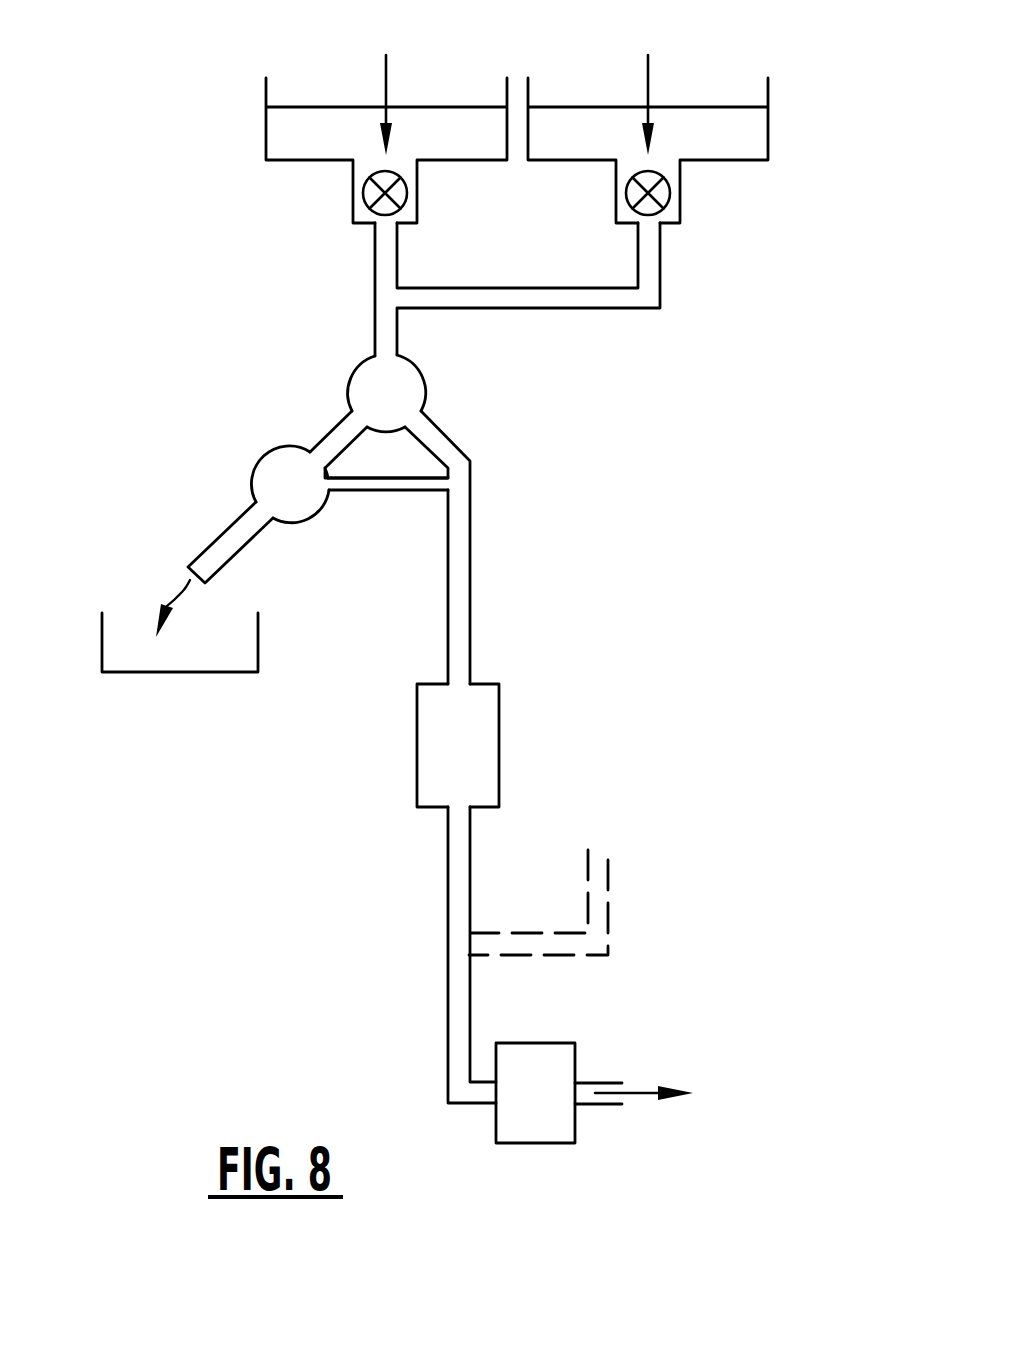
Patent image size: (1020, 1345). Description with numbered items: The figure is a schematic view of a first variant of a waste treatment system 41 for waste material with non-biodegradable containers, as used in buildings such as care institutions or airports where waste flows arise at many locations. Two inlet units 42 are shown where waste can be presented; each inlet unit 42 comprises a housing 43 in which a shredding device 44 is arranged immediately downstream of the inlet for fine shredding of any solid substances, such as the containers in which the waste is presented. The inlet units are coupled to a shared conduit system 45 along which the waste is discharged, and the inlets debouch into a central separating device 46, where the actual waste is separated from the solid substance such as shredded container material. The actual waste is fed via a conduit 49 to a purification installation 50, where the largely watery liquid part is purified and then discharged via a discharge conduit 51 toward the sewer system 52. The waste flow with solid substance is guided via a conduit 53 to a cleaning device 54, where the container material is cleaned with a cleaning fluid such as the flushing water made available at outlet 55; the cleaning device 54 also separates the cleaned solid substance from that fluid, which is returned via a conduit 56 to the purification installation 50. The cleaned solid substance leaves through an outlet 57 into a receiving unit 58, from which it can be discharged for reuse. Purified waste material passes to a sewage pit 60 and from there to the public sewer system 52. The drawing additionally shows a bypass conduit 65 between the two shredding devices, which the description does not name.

The waste treatment system 41 is at (176, 270).
The inlet unit 42 is at (386, 97).
The housing 43 is at (265, 127).
The shredding device 44 is at (397, 195).
The shared conduit system 45 is at (590, 383).
The central separating device 46 is at (402, 382).
The conduit 49 is at (443, 445).
The purification installation 50 is at (433, 757).
The discharge conduit 51 is at (457, 887).
The sewer system 52 is at (637, 1093).
The conduit 53 is at (337, 443).
The cleaning device 54 is at (283, 467).
The outlet 55 is at (445, 982).
The conduit 56 is at (387, 483).
The outlet 57 is at (225, 542).
The receiving unit 58 is at (213, 655).
The sewage pit 60 is at (533, 1063).
The bypass pipe 65 is at (385, 262).